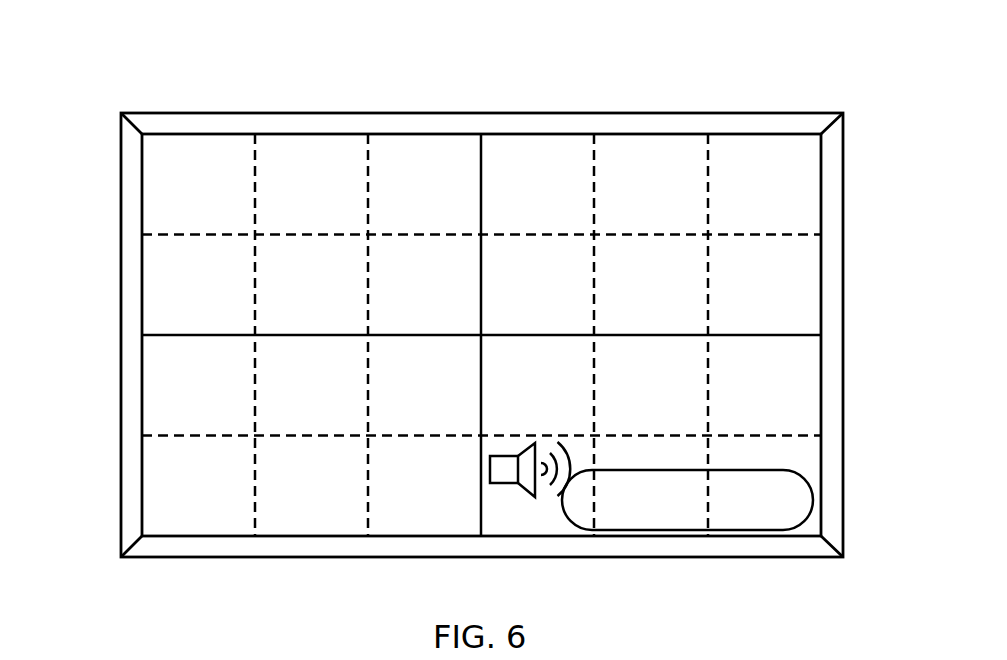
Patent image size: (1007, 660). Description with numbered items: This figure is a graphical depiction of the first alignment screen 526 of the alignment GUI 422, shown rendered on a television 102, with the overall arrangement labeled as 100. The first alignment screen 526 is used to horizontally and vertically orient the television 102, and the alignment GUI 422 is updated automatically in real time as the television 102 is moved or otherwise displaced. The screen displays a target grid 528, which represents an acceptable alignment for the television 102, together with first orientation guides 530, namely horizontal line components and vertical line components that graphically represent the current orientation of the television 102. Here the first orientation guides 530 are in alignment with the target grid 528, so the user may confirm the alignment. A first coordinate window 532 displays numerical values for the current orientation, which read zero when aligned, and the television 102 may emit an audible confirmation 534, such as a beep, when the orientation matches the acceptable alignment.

The display device 100 is at (480, 310).
The television 102 is at (843, 165).
The alignment GUI 422 is at (186, 161).
The first alignment screen 526 is at (480, 335).
The target grid 528 is at (743, 234).
The first orientation guides 530 is at (482, 177).
The first coordinate window 532 is at (738, 530).
The audible confirmation 534 is at (509, 484).